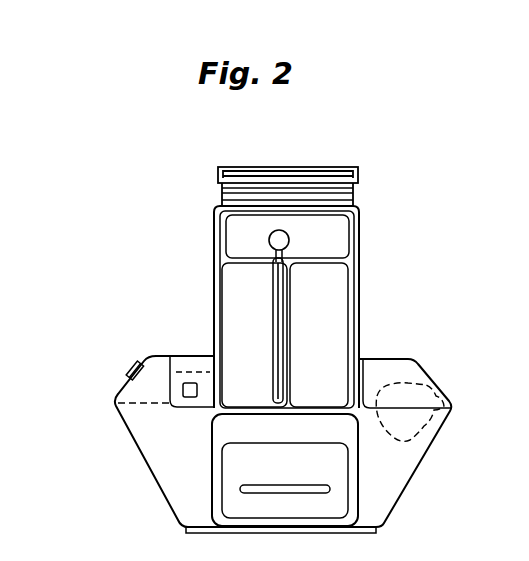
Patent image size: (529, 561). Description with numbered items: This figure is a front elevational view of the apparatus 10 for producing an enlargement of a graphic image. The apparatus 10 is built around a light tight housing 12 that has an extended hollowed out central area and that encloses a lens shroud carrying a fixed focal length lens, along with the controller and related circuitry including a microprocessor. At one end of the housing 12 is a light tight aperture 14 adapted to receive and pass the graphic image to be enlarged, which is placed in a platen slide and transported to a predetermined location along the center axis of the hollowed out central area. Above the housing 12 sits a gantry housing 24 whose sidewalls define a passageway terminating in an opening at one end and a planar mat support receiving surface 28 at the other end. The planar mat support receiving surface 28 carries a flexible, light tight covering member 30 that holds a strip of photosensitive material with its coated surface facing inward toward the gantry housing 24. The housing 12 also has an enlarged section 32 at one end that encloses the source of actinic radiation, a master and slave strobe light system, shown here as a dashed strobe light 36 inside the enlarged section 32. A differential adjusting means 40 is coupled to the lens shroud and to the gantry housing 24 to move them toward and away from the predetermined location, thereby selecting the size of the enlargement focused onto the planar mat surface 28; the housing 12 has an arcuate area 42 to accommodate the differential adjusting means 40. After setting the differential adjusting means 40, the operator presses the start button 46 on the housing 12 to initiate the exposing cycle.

The apparatus 10 is at (400, 253).
The light tight housing 12 is at (352, 317).
The light tight aperture 14 is at (348, 475).
The gantry housing 24 is at (355, 195).
The planar mat support receiving surface 28 is at (357, 168).
The flexible light tight covering member 30 is at (252, 168).
The enlarged section 32 is at (395, 358).
The strobe light 36 is at (420, 395).
The differential adjusting means 40 is at (270, 238).
The arcuate area 42 is at (237, 302).
The start button 46 is at (183, 390).